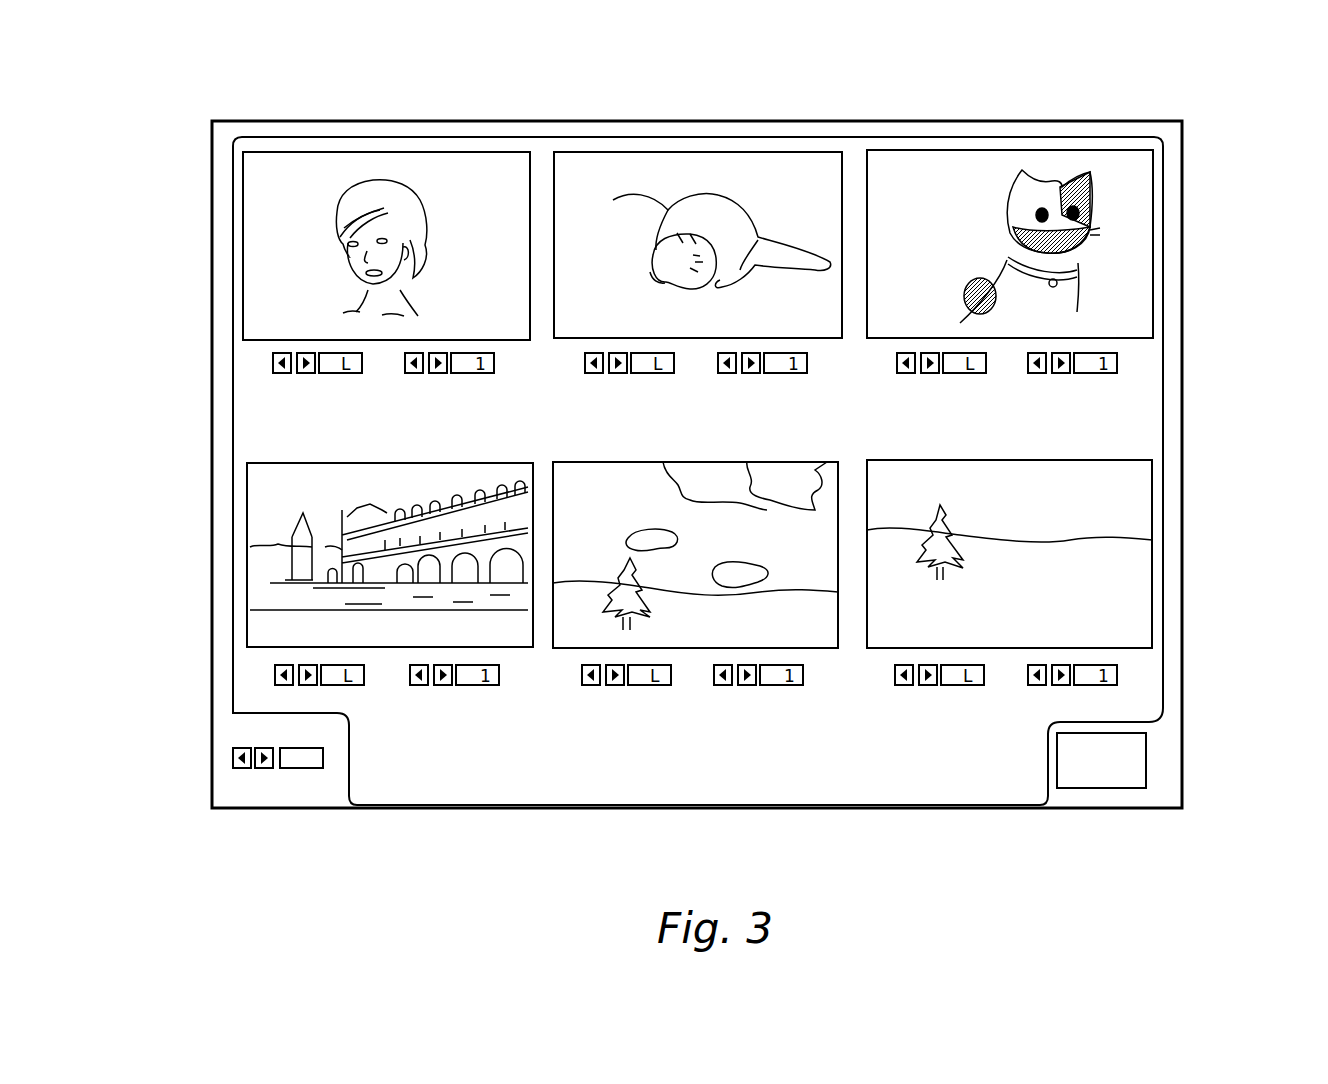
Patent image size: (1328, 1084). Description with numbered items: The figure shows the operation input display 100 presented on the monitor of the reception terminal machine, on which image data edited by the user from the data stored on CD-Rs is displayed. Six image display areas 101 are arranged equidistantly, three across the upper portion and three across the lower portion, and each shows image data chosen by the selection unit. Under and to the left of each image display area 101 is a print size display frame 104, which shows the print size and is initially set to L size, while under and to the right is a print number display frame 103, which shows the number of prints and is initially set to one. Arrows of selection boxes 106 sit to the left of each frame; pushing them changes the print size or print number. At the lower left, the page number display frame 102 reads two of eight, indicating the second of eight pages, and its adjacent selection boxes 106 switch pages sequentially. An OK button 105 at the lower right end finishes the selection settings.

The operation input display 100 is at (1191, 138).
The image display areas 101 is at (407, 152).
The page number display frame 102 is at (265, 735).
The print number display frames 103 is at (492, 373).
The print size display frames 104 is at (318, 373).
The OK button 105 is at (1146, 765).
The selection boxes 106 is at (708, 350).